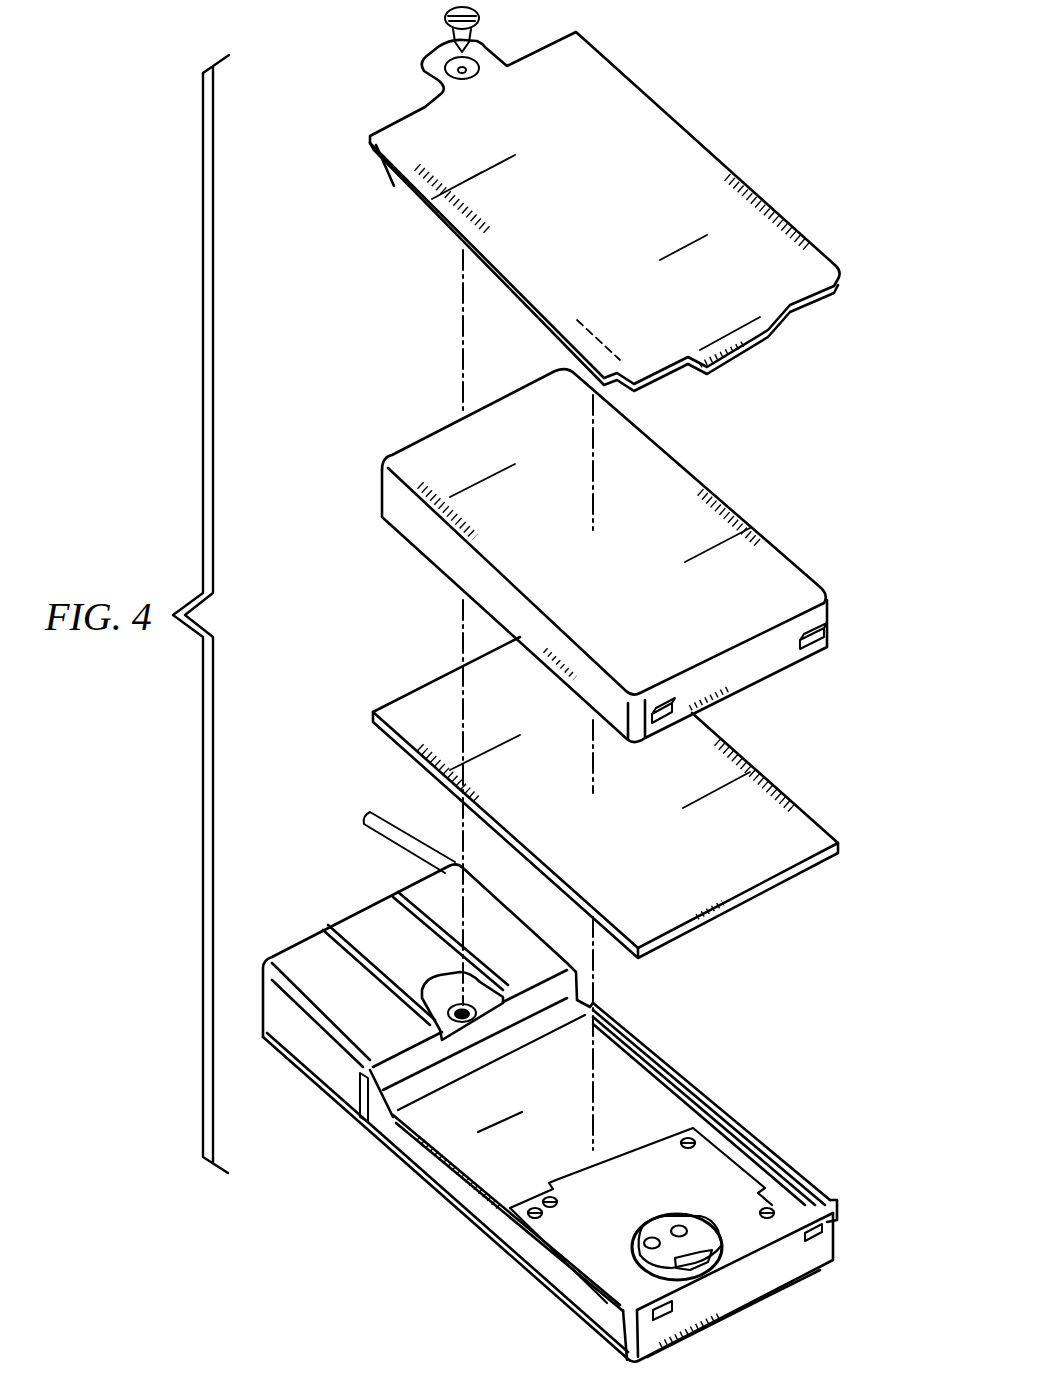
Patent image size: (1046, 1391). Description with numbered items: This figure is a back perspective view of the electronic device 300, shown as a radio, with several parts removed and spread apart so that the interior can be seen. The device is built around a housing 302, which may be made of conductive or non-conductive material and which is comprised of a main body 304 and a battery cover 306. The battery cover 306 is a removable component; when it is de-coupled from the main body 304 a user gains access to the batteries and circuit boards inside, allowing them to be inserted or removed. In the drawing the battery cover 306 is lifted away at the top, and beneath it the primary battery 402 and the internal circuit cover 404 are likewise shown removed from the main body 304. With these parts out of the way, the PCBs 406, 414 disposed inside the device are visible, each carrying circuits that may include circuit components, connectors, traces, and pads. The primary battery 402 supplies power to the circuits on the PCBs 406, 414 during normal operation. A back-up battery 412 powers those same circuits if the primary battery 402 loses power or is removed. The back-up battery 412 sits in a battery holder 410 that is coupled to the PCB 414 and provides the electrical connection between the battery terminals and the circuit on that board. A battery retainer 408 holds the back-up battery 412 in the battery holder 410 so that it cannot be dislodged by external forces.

The electronic device 300 is at (368, 103).
The housing 302 is at (332, 1075).
The main body 304 is at (487, 1213).
The battery cover 306 is at (600, 239).
The primary battery 402 is at (607, 591).
The internal circuit cover 404 is at (609, 856).
The PCB 406 is at (520, 1098).
The battery retainer 408 is at (707, 1215).
The battery holder 410 is at (643, 1230).
The back-up battery 412 is at (782, 1274).
The PCB 414 is at (633, 1200).